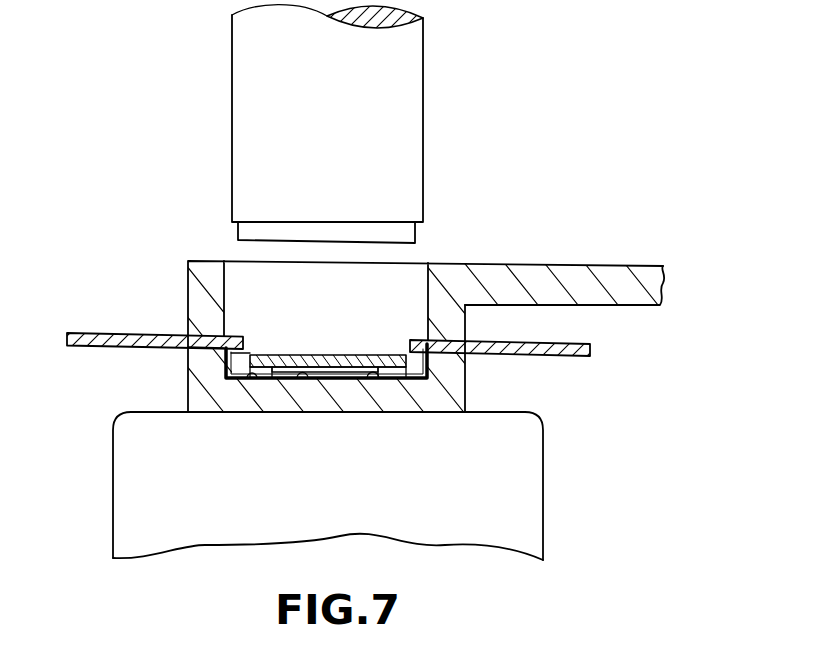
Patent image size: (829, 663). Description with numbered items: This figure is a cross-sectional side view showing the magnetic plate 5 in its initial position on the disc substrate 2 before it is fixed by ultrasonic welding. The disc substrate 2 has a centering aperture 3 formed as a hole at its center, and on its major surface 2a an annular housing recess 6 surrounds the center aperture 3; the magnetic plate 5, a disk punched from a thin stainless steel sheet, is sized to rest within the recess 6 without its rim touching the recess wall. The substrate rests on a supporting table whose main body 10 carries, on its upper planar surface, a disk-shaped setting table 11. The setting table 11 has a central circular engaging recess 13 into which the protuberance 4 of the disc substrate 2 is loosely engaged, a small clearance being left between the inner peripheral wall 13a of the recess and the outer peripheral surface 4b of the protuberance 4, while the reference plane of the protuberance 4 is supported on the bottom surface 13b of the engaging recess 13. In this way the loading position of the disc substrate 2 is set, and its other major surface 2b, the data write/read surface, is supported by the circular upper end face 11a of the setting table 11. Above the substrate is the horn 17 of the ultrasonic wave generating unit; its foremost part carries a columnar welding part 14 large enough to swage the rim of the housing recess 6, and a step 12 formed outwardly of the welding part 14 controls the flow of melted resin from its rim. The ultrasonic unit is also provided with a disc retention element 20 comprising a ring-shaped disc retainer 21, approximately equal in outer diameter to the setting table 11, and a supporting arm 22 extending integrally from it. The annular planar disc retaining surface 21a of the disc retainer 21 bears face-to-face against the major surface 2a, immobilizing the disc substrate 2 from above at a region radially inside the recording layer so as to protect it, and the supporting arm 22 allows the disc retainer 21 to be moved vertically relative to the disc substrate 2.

The disc substrate 2 is at (588, 352).
The major surface 2a is at (100, 333).
The major surface 2b is at (90, 350).
The centering aperture 3 is at (367, 380).
The protuberance 4 is at (222, 380).
The outer peripheral surface 4b is at (225, 358).
The magnetic plate 5 is at (337, 380).
The housing recess 6 is at (384, 380).
The main body of the supporting table 10 is at (532, 495).
The setting table 11 is at (452, 398).
The circular upper end face 11a is at (197, 348).
The step 12 is at (238, 225).
The engaging recess 13 is at (242, 380).
The inner peripheral wall 13a is at (418, 380).
The bottom surface 13b is at (297, 380).
The welding part 14 is at (360, 232).
The horn 17 is at (406, 107).
The disc retention element 20 is at (567, 244).
The disc retainer 21 is at (202, 307).
The disc retaining surface 21a is at (453, 367).
The supporting arm 22 is at (630, 297).